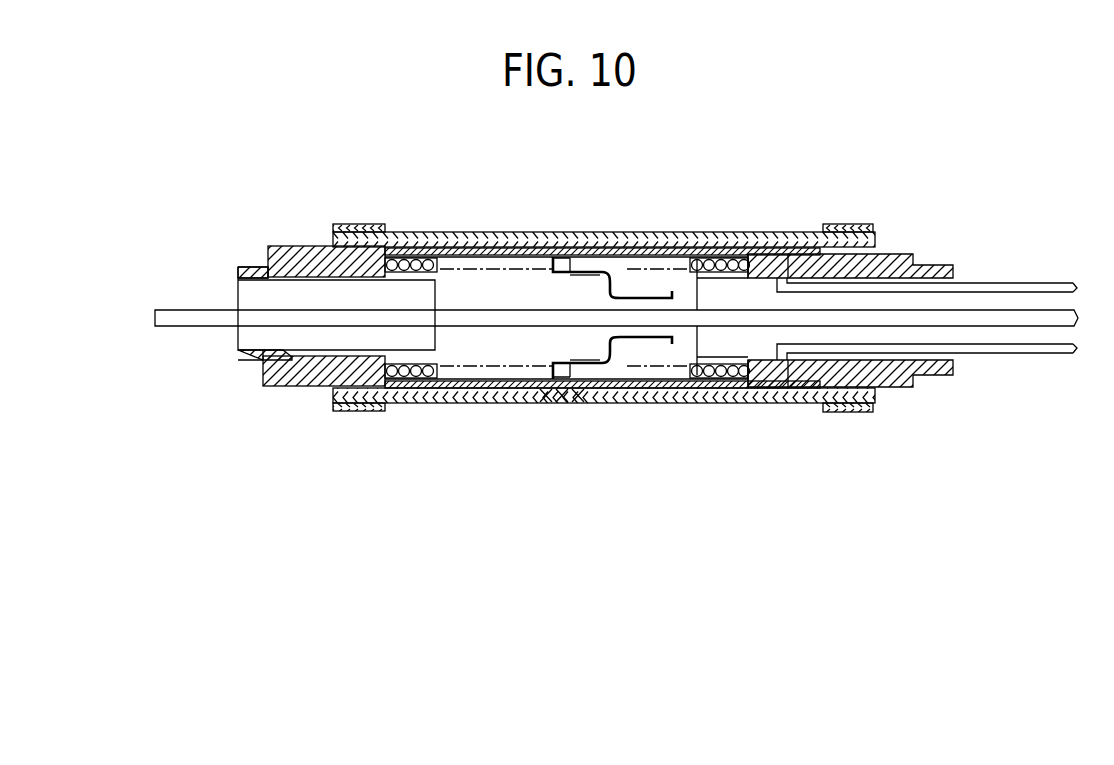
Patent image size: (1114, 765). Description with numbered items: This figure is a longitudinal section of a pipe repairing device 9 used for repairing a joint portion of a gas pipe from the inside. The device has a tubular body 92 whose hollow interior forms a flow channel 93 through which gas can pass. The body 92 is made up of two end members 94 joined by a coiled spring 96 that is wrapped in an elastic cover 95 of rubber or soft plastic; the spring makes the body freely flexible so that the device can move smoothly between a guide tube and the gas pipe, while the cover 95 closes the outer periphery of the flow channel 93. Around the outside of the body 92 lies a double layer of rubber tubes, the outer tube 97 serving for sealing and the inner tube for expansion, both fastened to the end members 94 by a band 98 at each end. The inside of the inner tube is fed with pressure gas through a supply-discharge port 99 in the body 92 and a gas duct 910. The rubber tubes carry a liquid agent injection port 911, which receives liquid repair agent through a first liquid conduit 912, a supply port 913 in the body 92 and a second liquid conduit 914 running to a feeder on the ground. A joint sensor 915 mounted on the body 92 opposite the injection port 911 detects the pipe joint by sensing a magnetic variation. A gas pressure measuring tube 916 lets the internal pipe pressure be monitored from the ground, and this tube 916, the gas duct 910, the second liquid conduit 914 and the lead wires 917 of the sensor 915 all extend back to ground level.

The pipe repairing device 9 is at (963, 164).
The tubular body 92 is at (307, 387).
The flow channel 93 is at (297, 337).
The end member 94 is at (287, 246).
The cover 95 is at (512, 232).
The coiled spring 96 is at (702, 232).
The outer rubber tube 97 is at (420, 232).
The band 98 is at (353, 224).
The supply-discharge port 99 is at (783, 262).
The gas duct 910 is at (1020, 283).
The liquid agent injection port 911 is at (553, 403).
The first liquid conduit 912 is at (758, 398).
The supply port 913 is at (797, 366).
The second liquid conduit 914 is at (1007, 360).
The joint sensor 915 is at (569, 232).
The gas pressure measuring tube 916 is at (190, 308).
The lead wires 917 is at (672, 330).